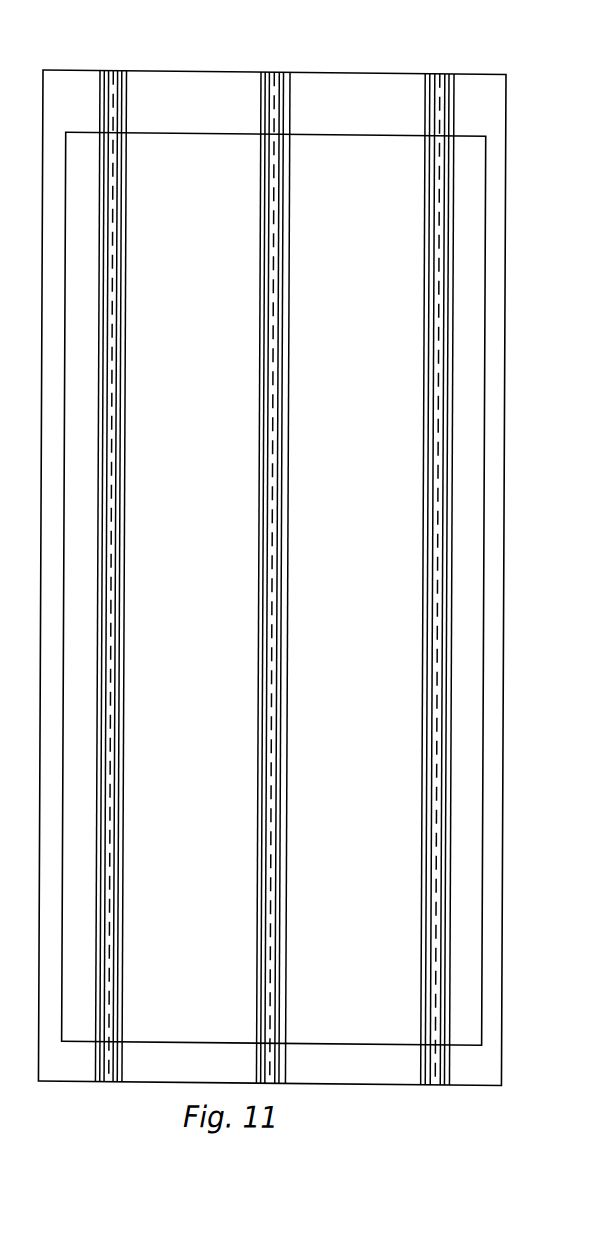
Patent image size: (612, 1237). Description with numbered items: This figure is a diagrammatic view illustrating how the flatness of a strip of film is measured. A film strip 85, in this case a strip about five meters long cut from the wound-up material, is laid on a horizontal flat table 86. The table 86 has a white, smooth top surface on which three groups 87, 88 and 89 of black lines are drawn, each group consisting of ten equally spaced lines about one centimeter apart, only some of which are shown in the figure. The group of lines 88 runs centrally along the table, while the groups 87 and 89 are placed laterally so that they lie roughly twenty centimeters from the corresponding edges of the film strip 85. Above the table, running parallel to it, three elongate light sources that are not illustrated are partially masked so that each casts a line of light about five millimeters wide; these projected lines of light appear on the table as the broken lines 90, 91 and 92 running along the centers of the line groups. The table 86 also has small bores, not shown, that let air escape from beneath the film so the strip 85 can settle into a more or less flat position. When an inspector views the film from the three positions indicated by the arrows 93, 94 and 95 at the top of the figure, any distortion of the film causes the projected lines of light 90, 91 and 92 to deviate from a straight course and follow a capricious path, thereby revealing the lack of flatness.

The film strip 85 is at (468, 653).
The horizontal flat table 86 is at (495, 793).
The first group of black lines 87 is at (100, 432).
The second group of black lines 88 is at (262, 431).
The third group of black lines 89 is at (427, 414).
The projected line of light 90 is at (110, 319).
The projected line of light 91 is at (276, 325).
The projected line of light 92 is at (441, 326).
The viewing position arrow 93 is at (116, 0).
The viewing position arrow 94 is at (275, 0).
The viewing position arrow 95 is at (441, 0).